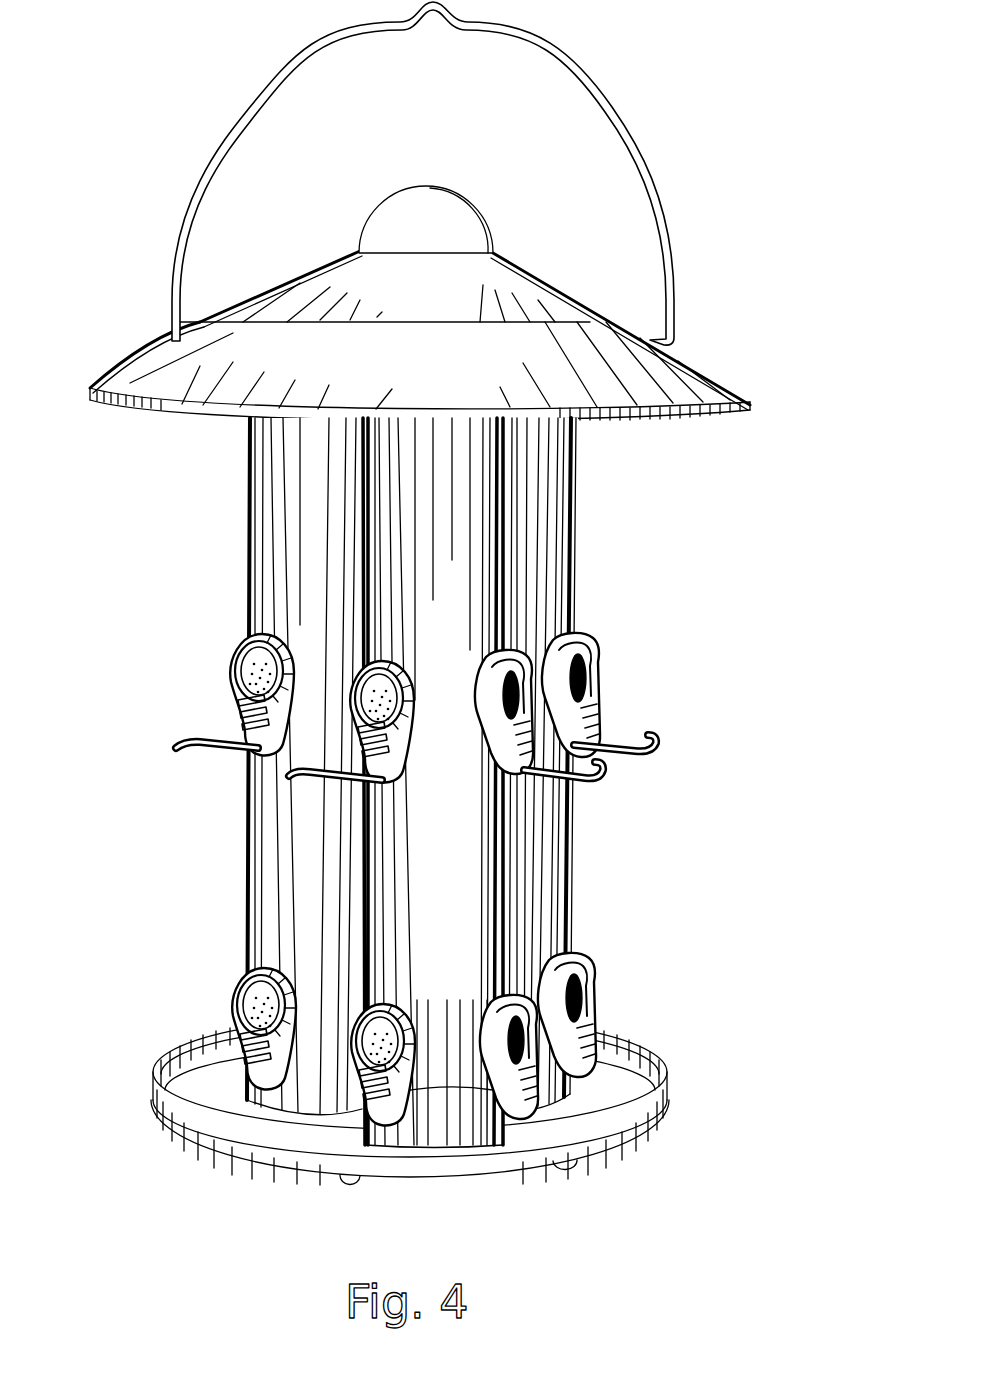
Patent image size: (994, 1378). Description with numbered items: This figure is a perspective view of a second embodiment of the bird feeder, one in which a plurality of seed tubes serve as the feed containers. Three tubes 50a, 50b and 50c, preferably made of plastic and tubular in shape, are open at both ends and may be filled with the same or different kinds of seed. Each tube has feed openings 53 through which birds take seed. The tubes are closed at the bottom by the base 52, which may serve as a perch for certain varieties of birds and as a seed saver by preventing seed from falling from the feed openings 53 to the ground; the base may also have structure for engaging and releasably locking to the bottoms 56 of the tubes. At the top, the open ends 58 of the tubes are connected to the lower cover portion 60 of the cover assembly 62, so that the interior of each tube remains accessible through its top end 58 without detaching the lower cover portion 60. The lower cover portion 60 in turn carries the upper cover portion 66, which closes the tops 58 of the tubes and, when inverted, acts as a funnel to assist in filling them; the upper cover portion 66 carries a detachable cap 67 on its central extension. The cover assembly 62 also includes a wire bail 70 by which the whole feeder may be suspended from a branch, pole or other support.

The wire bail 70 is at (578, 71).
The cover assembly 62 is at (432, 303).
The detachable cap 67 is at (438, 233).
The upper cover portion 66 is at (438, 287).
The lower cover portion 60 is at (394, 362).
The top open ends of the tubes 58 is at (411, 748).
The seed tube 50a is at (473, 805).
The seed tube 50b is at (273, 820).
The seed tube 50c is at (557, 832).
The feed openings 53 is at (240, 674).
The base 52 is at (612, 1073).
The bottoms of the tubes 56 is at (303, 1103).